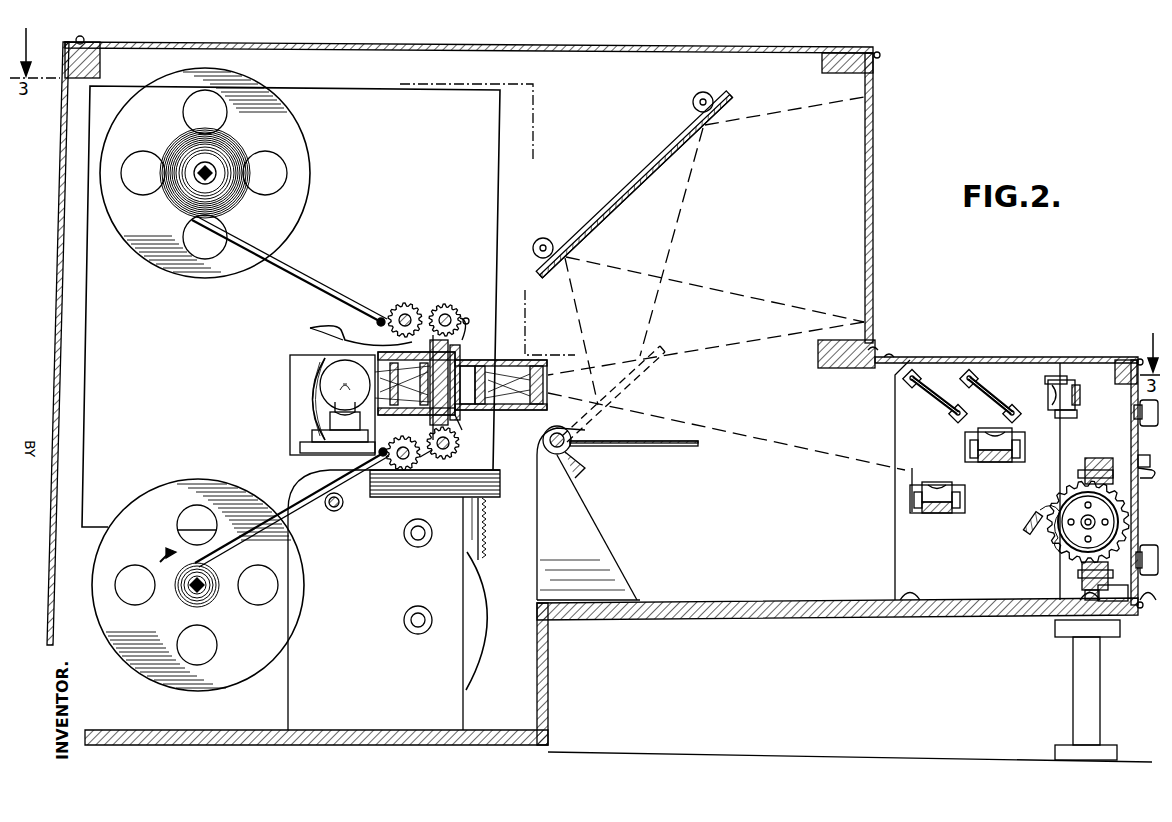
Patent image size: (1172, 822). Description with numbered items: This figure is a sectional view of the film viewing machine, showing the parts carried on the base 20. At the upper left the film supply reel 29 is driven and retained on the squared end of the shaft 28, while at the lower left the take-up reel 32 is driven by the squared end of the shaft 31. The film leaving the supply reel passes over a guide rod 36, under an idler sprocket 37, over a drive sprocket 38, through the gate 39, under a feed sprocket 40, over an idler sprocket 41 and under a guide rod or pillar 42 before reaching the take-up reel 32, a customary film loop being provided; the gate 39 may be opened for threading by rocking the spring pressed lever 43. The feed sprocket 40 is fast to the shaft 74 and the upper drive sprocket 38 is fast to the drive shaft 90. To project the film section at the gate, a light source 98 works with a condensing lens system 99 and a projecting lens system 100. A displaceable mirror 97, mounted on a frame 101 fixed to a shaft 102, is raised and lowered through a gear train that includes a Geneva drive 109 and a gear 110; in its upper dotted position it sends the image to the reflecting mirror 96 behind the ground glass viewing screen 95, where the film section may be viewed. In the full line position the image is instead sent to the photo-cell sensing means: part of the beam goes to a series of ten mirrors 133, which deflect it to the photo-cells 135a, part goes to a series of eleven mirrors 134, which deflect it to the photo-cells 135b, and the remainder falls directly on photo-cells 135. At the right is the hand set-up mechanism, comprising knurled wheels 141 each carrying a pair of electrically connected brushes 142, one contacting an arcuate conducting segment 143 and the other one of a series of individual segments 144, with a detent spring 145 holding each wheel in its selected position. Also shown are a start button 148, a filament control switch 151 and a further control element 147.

The base 20 is at (662, 603).
The shaft 28 is at (196, 180).
The film supply reel 29 is at (288, 135).
The shaft 31 is at (193, 587).
The take-up reel 32 is at (232, 662).
The guide rod 36 is at (376, 320).
The idler sprocket 37 is at (405, 312).
The drive sprocket 38 is at (446, 308).
The gate 39 is at (469, 430).
The feed sprocket 40 is at (458, 452).
The idler sprocket 41 is at (399, 468).
The guide rod or pillar 42 is at (383, 447).
The spring pressed lever 43 is at (318, 325).
The shaft 74 is at (433, 470).
The drive shaft 90 is at (462, 316).
The ground glass viewing screen 95 is at (874, 258).
The reflecting mirror 96 is at (628, 200).
The displaceable mirror 97 is at (590, 436).
The light source 98 is at (326, 385).
The condensing lens system 99 is at (457, 352).
The projecting lens system 100 is at (505, 412).
The frame 101 is at (583, 468).
The shaft 102 is at (558, 456).
The Geneva drive 109 is at (481, 652).
The gear 110 is at (487, 535).
The series of ten mirrors 133 is at (955, 395).
The series of eleven mirrors 134 is at (1000, 365).
The photo-cells 135 is at (1052, 408).
The photo-cells 135a is at (938, 514).
The photo-cells 135b is at (995, 462).
The knurled wheels 141 is at (1128, 520).
The brushes 142 is at (1082, 470).
The arcuate conducting segment 143 is at (1105, 565).
The individual segments 144 is at (1052, 552).
The detent spring 145 is at (1040, 512).
The switch 147 is at (1148, 545).
The start button 148 is at (1138, 405).
The filament control switch 151 is at (1154, 470).